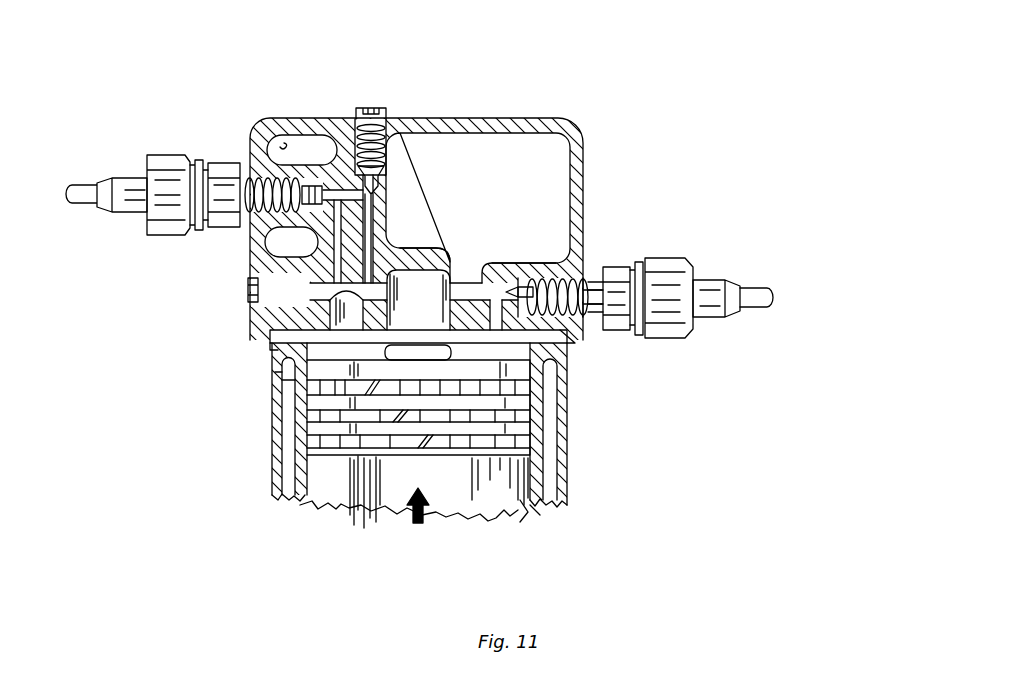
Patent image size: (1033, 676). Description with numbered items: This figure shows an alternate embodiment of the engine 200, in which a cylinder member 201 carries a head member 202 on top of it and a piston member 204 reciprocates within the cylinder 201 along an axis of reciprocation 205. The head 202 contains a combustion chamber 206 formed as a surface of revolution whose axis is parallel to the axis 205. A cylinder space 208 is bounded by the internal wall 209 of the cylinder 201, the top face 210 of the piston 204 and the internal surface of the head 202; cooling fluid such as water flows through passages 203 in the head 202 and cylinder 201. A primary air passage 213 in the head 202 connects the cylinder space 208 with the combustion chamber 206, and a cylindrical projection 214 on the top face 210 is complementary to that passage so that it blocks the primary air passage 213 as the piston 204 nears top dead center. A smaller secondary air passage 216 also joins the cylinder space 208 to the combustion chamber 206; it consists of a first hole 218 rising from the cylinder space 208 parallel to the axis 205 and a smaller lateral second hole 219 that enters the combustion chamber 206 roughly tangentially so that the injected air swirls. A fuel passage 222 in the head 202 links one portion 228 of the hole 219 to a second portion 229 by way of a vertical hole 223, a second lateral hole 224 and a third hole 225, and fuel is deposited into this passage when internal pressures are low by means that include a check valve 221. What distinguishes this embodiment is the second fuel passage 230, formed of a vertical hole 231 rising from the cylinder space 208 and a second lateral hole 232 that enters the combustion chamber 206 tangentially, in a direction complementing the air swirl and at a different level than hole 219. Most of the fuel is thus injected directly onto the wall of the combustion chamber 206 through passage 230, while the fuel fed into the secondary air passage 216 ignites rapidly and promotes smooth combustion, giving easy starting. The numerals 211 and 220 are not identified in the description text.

The engine 200 is at (245, 447).
The cylinder member 201 is at (568, 447).
The head member 202 is at (585, 156).
The passages 203 is at (287, 157).
The piston member 204 is at (340, 522).
The axis of reciprocation 205 is at (404, 530).
The combustion chamber 206 is at (436, 275).
The cylinder space 208 is at (272, 349).
The internal wall 209 is at (540, 505).
The top face 210 is at (520, 365).
The base plate end 211 is at (566, 348).
The primary air passage 213 is at (445, 332).
The cylindrical projection 214 is at (398, 332).
The secondary air passage 216 is at (276, 374).
The first hole 218 is at (285, 385).
The lateral second hole 219 is at (262, 238).
The adjusting screw 220 is at (360, 108).
The check valve 221 is at (160, 150).
The fuel passage 222 is at (392, 188).
The vertical hole 223 is at (338, 258).
The second lateral hole 224 is at (333, 198).
The third hole 225 is at (380, 178).
The portion of hole 228 is at (268, 343).
The second portion 229 is at (362, 286).
The second fuel passage 230 is at (540, 282).
The vertical hole 231 is at (488, 300).
The second lateral hole 232 is at (506, 288).